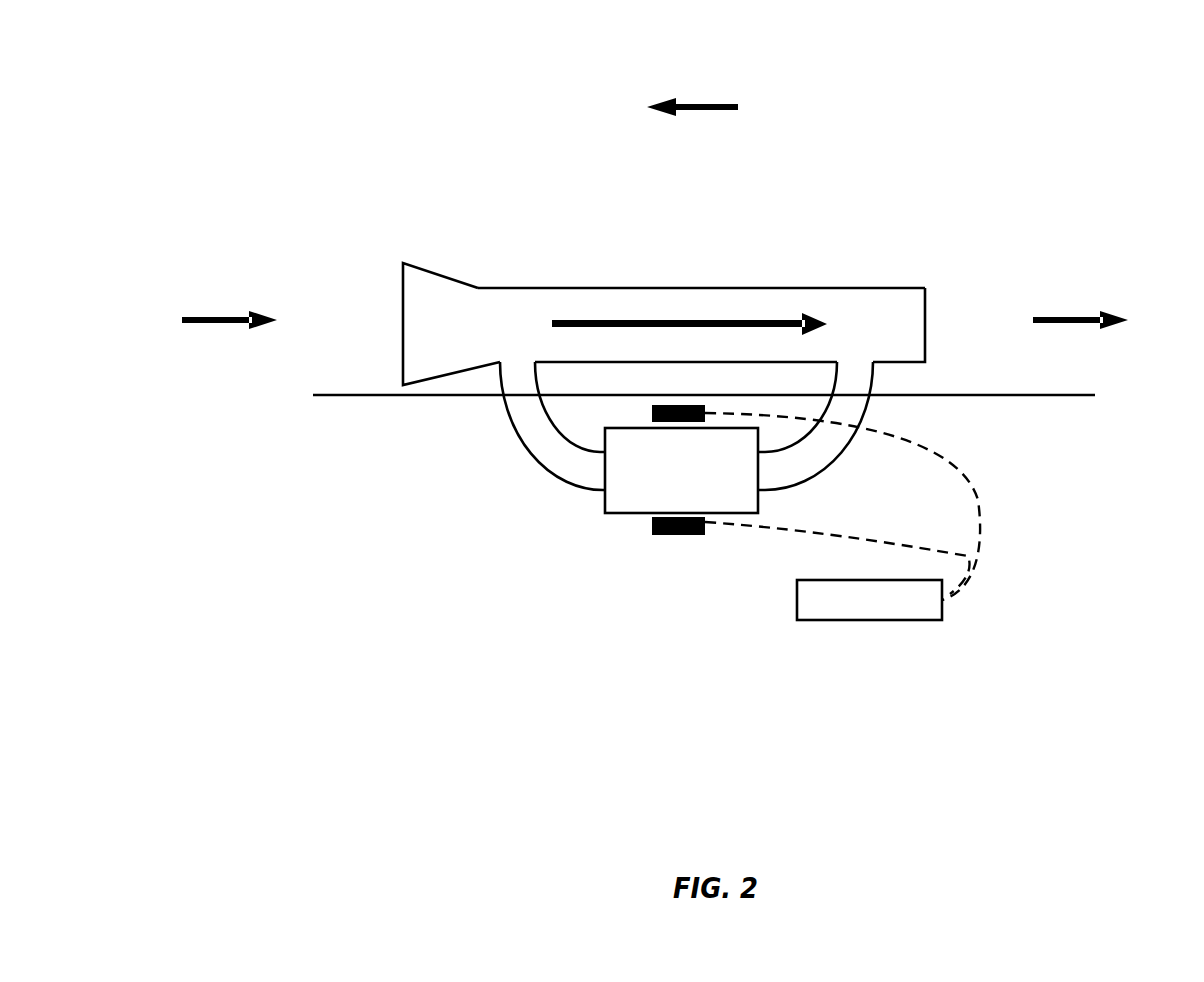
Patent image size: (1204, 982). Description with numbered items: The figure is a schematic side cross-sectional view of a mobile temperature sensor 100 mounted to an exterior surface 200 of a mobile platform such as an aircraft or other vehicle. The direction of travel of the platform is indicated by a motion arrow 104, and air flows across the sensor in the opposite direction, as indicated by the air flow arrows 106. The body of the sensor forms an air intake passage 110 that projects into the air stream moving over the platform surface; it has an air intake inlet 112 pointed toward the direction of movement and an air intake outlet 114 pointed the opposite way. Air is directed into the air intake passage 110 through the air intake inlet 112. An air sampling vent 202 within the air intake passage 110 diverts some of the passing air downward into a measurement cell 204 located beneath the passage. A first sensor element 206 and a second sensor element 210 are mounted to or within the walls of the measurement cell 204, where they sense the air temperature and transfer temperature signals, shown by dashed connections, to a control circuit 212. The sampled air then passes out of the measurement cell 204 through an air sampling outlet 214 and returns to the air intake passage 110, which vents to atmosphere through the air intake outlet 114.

The mobile temperature sensor 100 is at (295, 108).
The motion arrow 104 is at (727, 102).
The air flow arrows 106 is at (225, 323).
The air intake passage 110 is at (817, 305).
The air intake inlet 112 is at (402, 282).
The air intake outlet 114 is at (930, 305).
The exterior surface 200 is at (328, 402).
The air sampling vent 202 is at (513, 363).
The measurement cell 204 is at (623, 492).
The first sensor element 206 is at (647, 415).
The second sensor element 210 is at (663, 537).
The control circuit 212 is at (872, 605).
The air sampling outlet 214 is at (855, 365).